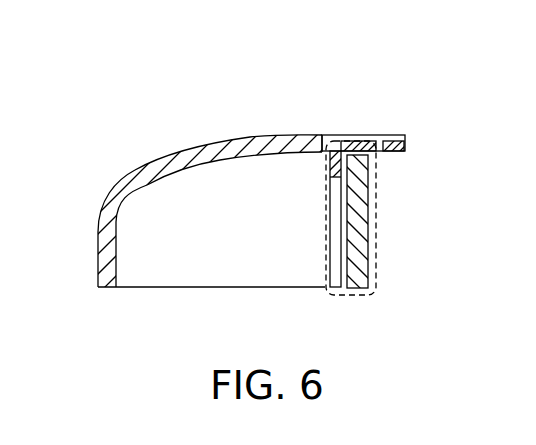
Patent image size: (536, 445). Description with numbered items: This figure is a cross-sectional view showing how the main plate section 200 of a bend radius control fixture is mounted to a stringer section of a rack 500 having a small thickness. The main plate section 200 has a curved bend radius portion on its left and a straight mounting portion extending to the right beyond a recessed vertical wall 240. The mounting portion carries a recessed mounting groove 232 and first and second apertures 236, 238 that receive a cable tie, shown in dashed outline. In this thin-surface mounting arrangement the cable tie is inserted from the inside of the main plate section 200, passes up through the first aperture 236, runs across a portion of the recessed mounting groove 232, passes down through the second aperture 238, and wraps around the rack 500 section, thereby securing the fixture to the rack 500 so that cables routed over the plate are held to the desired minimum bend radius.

The main plate section 200 is at (203, 147).
The recessed mounting groove 232 is at (398, 132).
The first aperture 236 is at (332, 132).
The second aperture 238 is at (377, 132).
The recessed vertical wall 240 is at (335, 248).
The rack 500 is at (360, 242).